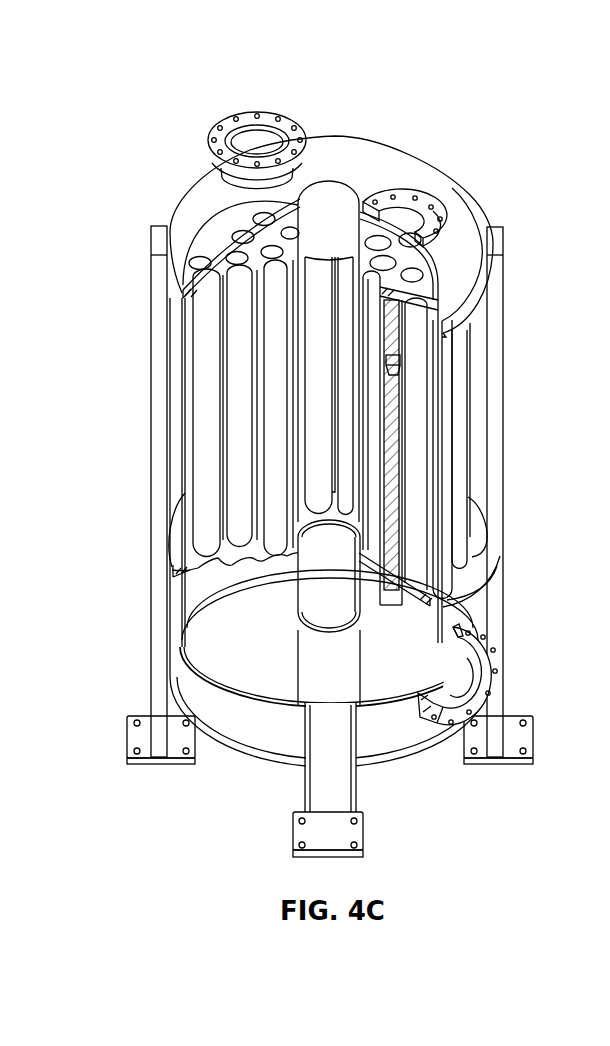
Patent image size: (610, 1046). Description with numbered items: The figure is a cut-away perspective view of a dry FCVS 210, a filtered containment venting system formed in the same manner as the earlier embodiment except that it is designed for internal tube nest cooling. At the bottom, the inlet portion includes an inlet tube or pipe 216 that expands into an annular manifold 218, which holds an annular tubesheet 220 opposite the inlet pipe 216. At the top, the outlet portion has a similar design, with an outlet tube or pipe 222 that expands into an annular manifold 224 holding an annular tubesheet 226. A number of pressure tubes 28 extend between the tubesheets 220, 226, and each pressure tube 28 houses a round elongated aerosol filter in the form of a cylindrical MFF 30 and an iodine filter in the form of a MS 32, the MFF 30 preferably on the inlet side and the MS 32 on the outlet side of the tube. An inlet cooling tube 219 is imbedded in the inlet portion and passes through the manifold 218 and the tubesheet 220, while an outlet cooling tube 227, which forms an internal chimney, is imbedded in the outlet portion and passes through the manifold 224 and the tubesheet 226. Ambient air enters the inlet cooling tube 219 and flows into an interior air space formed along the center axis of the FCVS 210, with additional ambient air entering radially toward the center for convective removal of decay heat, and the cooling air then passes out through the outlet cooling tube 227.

The dry FCVS 210 is at (168, 826).
The inlet tube or pipe 216 is at (460, 688).
The annular manifold 218 is at (383, 730).
The inlet cooling tube 219 is at (312, 668).
The annular tubesheet 220 is at (473, 555).
The outlet tube or pipe 222 is at (251, 112).
The annular manifold 224 is at (364, 155).
The annular tubesheet 226 is at (183, 290).
The outlet cooling tube 227 is at (330, 200).
The pressure tubes 28 is at (443, 427).
The cylindrical MFF 30 is at (400, 486).
The MS 32 is at (400, 353).